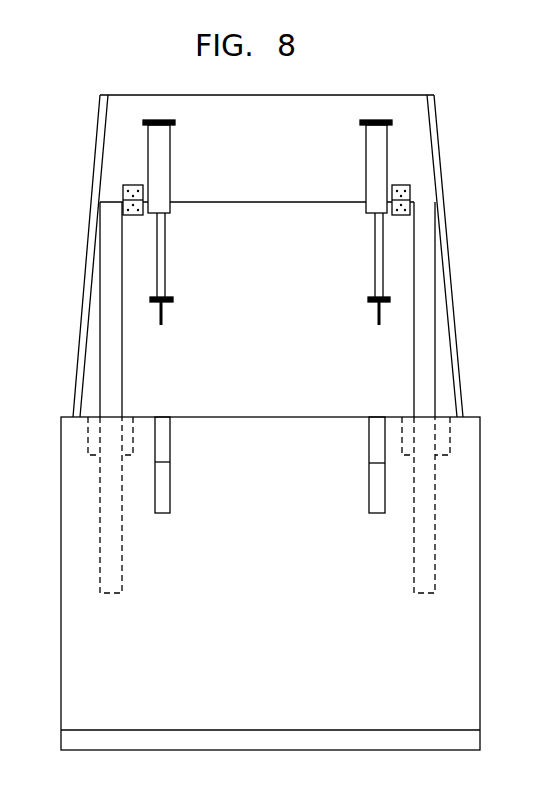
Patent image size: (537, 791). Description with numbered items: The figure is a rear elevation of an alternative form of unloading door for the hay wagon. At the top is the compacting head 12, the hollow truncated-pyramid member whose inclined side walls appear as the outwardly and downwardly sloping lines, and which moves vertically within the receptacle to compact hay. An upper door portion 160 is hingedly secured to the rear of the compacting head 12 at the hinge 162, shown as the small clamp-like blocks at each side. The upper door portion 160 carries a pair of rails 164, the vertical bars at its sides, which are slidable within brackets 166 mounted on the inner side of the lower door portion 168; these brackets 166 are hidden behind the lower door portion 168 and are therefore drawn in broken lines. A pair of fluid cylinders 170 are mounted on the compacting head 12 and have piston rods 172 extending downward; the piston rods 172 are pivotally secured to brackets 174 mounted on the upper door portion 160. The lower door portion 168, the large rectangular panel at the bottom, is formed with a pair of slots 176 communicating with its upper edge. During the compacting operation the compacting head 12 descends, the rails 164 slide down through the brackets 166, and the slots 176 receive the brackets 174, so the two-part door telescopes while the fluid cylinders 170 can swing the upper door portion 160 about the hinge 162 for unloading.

The compacting head 12 is at (450, 276).
The upper door portion 160 is at (237, 333).
The hinge 162 is at (128, 185).
The rails 164 is at (122, 386).
The brackets 166 is at (87, 466).
The lower door portion 168 is at (238, 556).
The fluid cylinders 170 is at (172, 161).
The piston rods 172 is at (167, 264).
The brackets 174 is at (162, 325).
The slots 176 is at (171, 449).